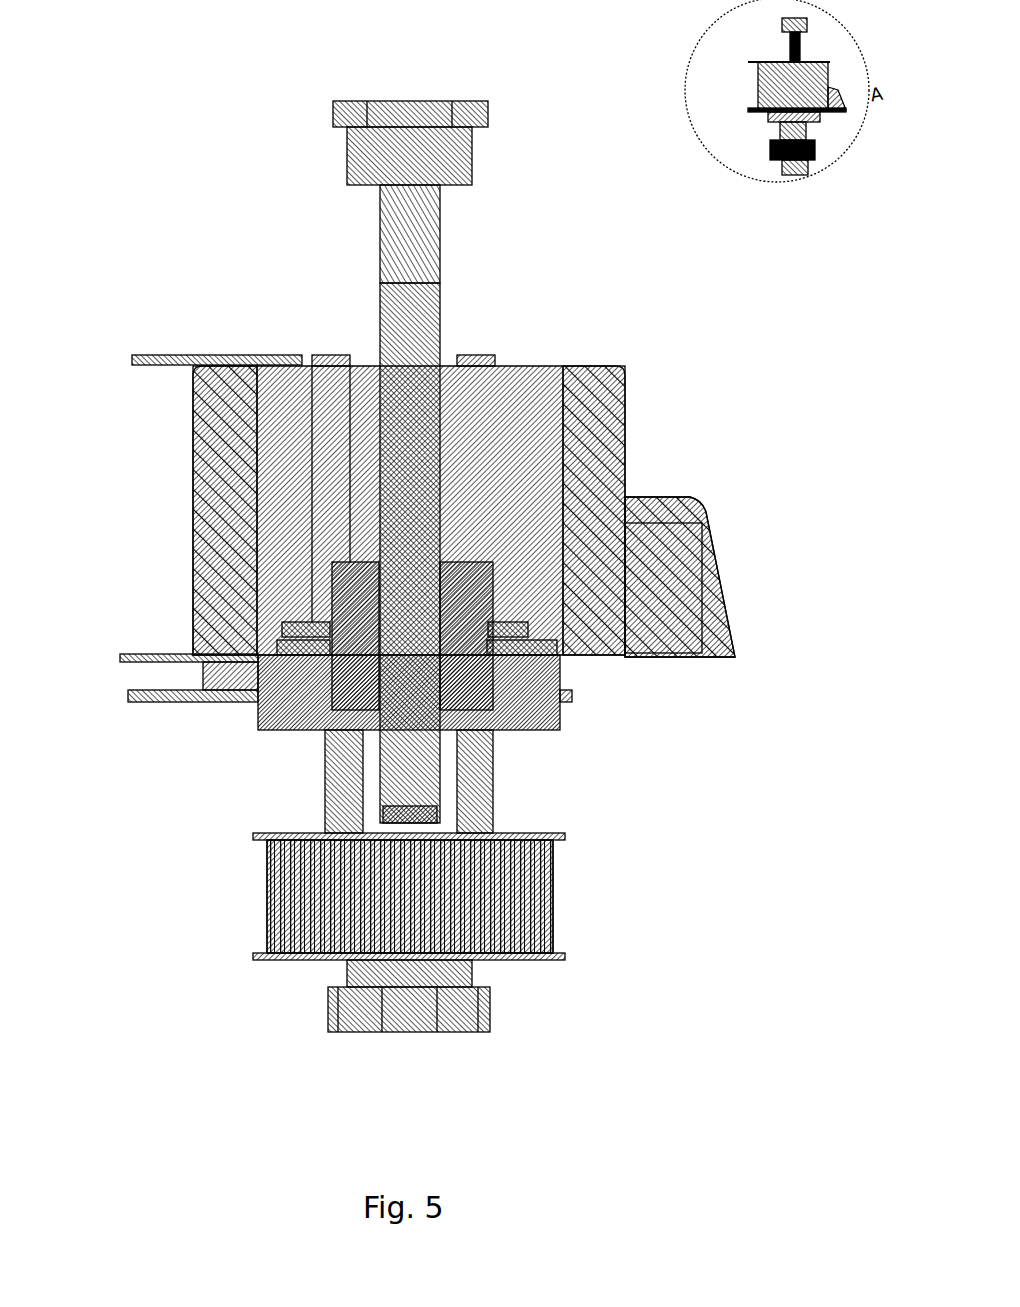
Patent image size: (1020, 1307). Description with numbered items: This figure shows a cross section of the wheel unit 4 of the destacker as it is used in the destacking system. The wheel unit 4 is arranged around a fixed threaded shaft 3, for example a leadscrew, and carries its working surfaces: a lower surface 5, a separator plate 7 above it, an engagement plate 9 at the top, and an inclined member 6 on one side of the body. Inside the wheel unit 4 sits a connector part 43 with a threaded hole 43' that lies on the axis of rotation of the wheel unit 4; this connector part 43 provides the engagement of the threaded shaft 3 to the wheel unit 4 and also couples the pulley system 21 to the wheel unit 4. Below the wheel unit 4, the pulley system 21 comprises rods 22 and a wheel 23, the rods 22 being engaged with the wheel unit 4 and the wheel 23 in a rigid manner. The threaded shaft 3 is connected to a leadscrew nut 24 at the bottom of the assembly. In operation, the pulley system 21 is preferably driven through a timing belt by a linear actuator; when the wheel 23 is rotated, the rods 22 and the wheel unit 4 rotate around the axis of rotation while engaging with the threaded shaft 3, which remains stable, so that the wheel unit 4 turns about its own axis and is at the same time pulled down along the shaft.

The threaded shaft 3 is at (430, 318).
The wheel unit 4 is at (603, 365).
The lower surface 5 is at (128, 702).
The inclined member 6 is at (662, 497).
The separator plate 7 is at (138, 653).
The engagement plate 9 is at (137, 363).
The pulley system 21 is at (380, 891).
The rods 22 is at (322, 772).
The wheel 23 is at (537, 897).
The leadscrew nut 24 is at (487, 1008).
The connector part 43 is at (576, 661).
The threaded hole 43' is at (536, 749).